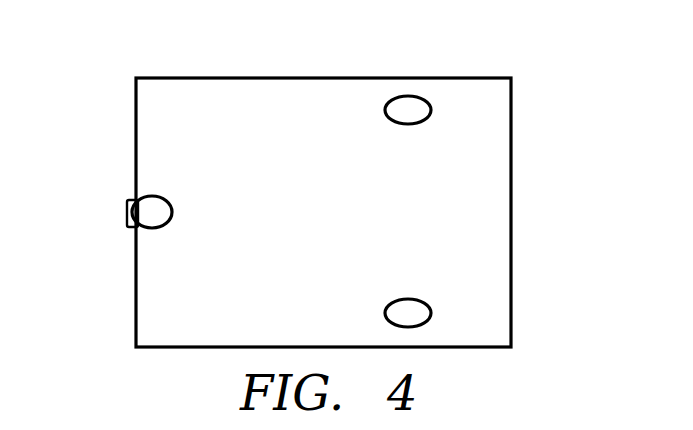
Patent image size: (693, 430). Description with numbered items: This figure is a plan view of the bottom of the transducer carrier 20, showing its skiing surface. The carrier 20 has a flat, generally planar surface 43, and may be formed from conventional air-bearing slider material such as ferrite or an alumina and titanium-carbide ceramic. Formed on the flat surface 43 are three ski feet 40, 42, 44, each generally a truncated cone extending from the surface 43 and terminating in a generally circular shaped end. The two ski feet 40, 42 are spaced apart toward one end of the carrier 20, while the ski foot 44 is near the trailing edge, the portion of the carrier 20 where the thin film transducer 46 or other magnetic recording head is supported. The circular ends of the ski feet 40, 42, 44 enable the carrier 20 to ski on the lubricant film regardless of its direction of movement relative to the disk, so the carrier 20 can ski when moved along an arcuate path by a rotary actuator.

The carrier 20 is at (570, 52).
The ski foot 40 is at (418, 110).
The ski foot 42 is at (418, 313).
The flat surface 43 is at (232, 272).
The ski foot 44 is at (153, 216).
The thin film transducer 46 is at (125, 212).